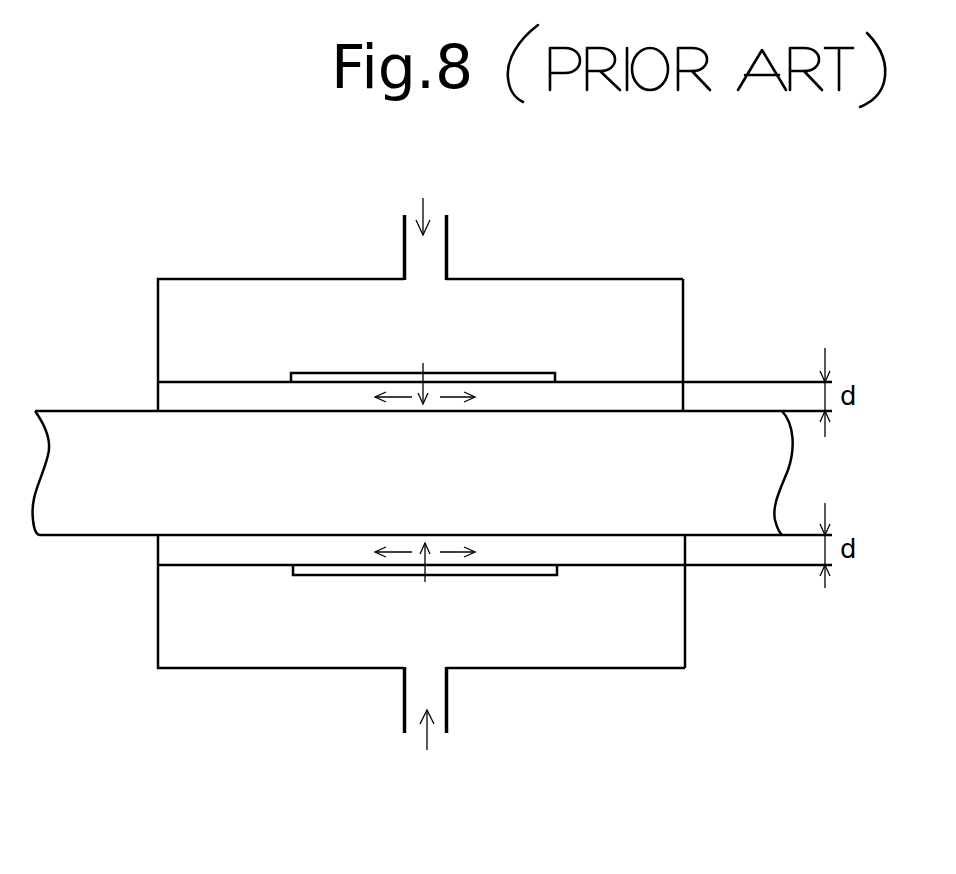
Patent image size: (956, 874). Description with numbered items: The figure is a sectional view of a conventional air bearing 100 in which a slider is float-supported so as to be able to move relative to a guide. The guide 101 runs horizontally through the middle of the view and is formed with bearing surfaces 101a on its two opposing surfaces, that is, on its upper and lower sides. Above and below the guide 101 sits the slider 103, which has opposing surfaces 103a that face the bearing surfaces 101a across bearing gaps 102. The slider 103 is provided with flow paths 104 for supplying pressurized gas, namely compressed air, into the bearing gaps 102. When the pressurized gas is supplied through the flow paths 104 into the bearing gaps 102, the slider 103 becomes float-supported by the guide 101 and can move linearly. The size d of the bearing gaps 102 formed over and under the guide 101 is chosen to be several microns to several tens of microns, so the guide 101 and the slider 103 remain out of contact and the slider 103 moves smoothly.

The air bearing 100 is at (149, 238).
The guide 101 is at (622, 490).
The bearing surfaces 101a is at (185, 411).
The bearing gaps 102 is at (327, 400).
The slider 103 is at (645, 312).
The opposing surfaces 103a is at (208, 382).
The flow paths 104 is at (427, 258).